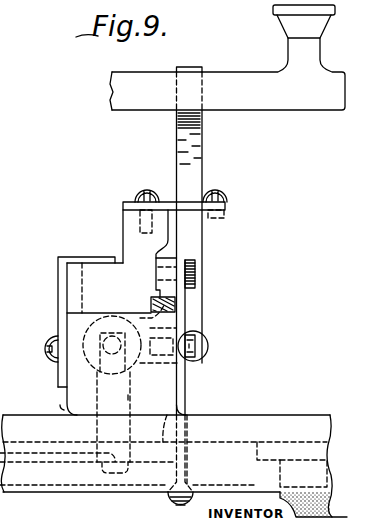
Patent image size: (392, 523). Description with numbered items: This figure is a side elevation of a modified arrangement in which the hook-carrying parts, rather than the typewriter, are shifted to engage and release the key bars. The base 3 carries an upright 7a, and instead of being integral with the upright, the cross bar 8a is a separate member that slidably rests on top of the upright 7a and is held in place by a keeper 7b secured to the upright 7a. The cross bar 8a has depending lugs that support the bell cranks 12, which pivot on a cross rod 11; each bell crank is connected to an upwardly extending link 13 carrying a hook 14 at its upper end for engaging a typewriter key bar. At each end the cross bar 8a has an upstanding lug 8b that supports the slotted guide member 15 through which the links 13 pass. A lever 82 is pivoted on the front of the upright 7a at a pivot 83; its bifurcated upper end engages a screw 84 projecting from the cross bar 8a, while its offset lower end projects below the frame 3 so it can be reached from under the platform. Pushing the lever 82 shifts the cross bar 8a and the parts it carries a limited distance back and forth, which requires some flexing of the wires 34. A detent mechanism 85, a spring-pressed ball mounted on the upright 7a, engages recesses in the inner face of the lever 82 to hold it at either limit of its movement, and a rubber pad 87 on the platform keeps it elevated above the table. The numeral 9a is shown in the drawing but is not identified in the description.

The base 3 is at (265, 415).
The upright 7a is at (78, 393).
The keeper 7b is at (63, 297).
The cross bar 8a is at (125, 288).
The upstanding lug 8b is at (128, 227).
The screw 9a is at (88, 360).
The cross rod 11 is at (121, 390).
The bell crank 12 is at (128, 398).
The link 13 is at (192, 163).
The hook 14 is at (195, 67).
The guide member 15 is at (203, 207).
The wire 34 is at (27, 457).
The lever 82 is at (185, 387).
The pivot 83 is at (198, 353).
The screw 84 is at (197, 268).
The detent mechanism 85 is at (175, 305).
The rubber pad 87 is at (308, 507).